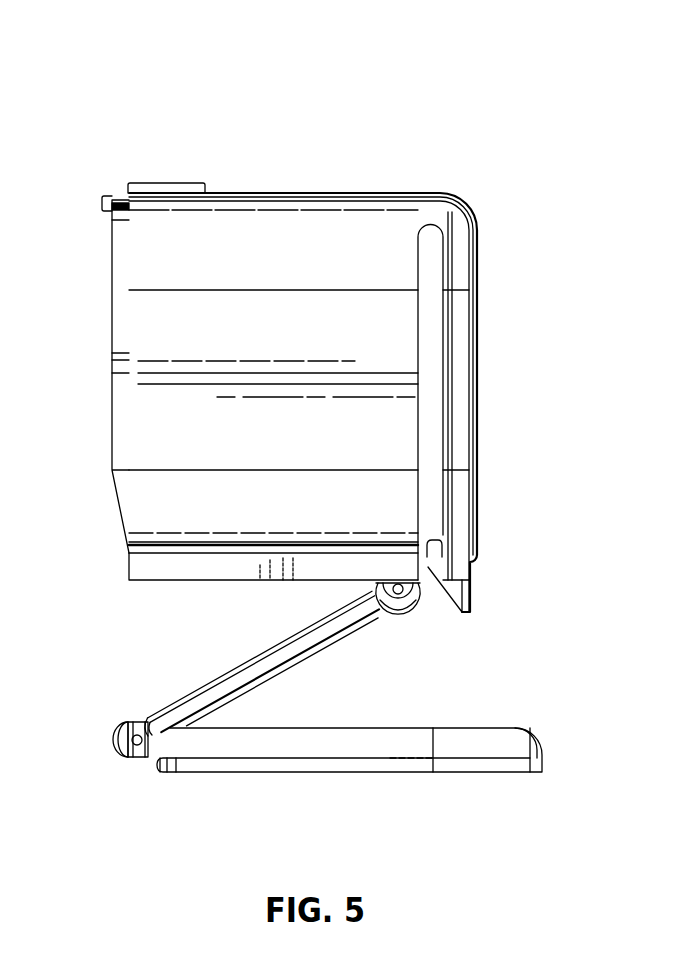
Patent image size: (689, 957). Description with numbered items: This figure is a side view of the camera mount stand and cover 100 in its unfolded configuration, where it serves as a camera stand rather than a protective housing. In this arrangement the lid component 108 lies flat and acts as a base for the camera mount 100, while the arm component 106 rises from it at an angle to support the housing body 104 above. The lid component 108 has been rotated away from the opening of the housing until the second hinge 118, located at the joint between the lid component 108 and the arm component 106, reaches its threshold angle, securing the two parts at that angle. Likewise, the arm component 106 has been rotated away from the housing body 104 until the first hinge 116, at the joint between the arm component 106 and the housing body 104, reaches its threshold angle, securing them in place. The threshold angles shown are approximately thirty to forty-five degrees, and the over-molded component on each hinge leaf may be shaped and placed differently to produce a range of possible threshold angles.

The camera mount stand and cover 100 is at (63, 37).
The housing body 104 is at (316, 166).
The arm component 106 is at (180, 663).
The lid component 108 is at (467, 718).
The first hinge 116 is at (422, 614).
The second hinge 118 is at (108, 752).